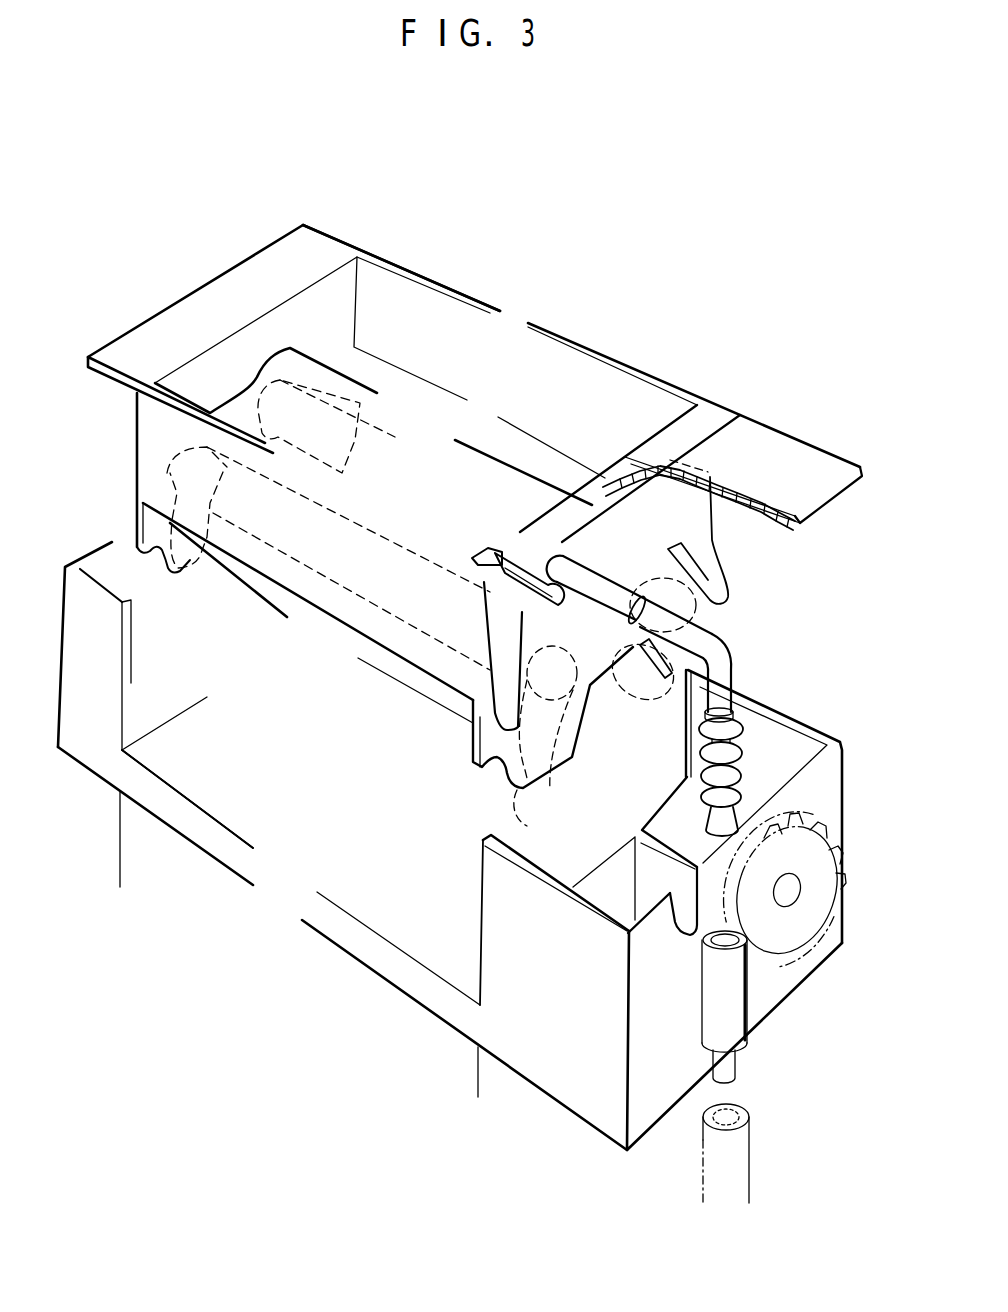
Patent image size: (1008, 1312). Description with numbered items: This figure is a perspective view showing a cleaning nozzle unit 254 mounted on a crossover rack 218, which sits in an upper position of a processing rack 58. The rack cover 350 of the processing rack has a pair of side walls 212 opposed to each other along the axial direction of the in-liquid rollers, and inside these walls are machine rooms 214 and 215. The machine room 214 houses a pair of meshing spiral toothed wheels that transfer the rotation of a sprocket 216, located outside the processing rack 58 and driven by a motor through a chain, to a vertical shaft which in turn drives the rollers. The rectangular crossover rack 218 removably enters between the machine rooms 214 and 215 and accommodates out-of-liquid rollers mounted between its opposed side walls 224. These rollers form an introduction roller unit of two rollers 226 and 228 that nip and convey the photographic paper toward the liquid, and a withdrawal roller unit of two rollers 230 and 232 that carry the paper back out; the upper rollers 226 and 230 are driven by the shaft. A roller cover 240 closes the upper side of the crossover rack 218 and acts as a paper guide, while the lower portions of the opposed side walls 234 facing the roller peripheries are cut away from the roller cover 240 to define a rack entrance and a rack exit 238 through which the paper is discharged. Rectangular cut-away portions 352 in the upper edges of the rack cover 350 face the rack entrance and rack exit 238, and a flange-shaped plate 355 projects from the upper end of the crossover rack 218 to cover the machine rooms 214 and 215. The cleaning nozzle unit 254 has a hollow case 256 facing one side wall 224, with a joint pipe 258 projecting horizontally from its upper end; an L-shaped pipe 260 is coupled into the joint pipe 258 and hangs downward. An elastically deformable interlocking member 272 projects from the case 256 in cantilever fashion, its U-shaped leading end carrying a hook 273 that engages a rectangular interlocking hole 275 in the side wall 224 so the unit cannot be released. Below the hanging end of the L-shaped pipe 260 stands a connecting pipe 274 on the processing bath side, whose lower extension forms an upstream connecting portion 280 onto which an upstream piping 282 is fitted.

The processing rack 58 is at (112, 816).
The side walls 212 is at (800, 803).
The machine room 214 is at (767, 770).
The machine room 215 is at (112, 562).
The sprocket 216 is at (827, 862).
The crossover rack 218 is at (664, 376).
The side walls 224 is at (267, 333).
The roller 226 is at (646, 648).
The roller 228 is at (664, 824).
The roller 230 is at (553, 758).
The roller 232 is at (527, 773).
The opposed side walls 234 is at (577, 372).
The rack exit 238 is at (393, 657).
The roller cover 240 is at (380, 378).
The cleaning nozzle unit 254 is at (723, 523).
The case 256 is at (690, 538).
The joint pipe 258 is at (567, 506).
The L-shaped pipe 260 is at (730, 654).
The interlocking member 272 is at (483, 627).
The hook 273 is at (490, 548).
The connecting pipe 274 is at (747, 990).
The interlocking hole 275 is at (483, 581).
The connecting portion 280 is at (727, 1062).
The piping 282 is at (753, 1138).
The rack cover 350 is at (56, 705).
The rectangular cut-away portions 352 is at (160, 818).
The flange-shaped plate 355 is at (124, 353).